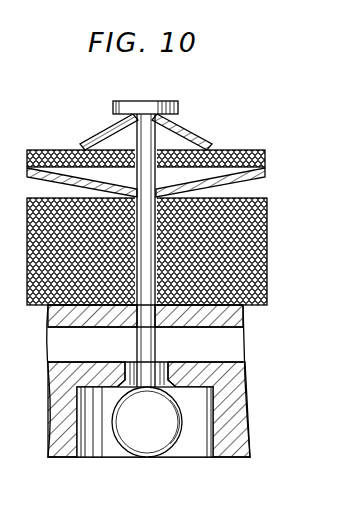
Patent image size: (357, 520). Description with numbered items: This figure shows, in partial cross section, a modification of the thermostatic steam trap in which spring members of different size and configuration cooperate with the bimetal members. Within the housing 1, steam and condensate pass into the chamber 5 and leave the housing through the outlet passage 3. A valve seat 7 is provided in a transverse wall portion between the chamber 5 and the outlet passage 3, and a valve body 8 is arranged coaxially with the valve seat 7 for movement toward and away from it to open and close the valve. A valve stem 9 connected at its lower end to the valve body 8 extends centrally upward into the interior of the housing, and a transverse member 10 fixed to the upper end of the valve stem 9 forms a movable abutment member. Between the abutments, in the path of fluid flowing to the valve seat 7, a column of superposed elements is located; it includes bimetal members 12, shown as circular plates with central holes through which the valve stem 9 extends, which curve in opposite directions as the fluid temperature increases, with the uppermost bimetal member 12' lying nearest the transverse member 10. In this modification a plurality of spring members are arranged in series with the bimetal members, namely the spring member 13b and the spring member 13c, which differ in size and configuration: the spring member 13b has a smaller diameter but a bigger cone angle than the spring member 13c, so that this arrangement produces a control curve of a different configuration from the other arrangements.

The housing 1 is at (233, 384).
The outlet passage 3 is at (206, 454).
The chamber 5 is at (226, 345).
The valve seat 7 is at (160, 392).
The valve body 8 is at (136, 452).
The valve stem 9 is at (155, 341).
The transverse member 10 is at (116, 108).
The bimetal members 12 is at (166, 251).
The uppermost bimetal member 12' is at (166, 155).
The spring member 13b is at (186, 120).
The spring member 13c is at (258, 181).